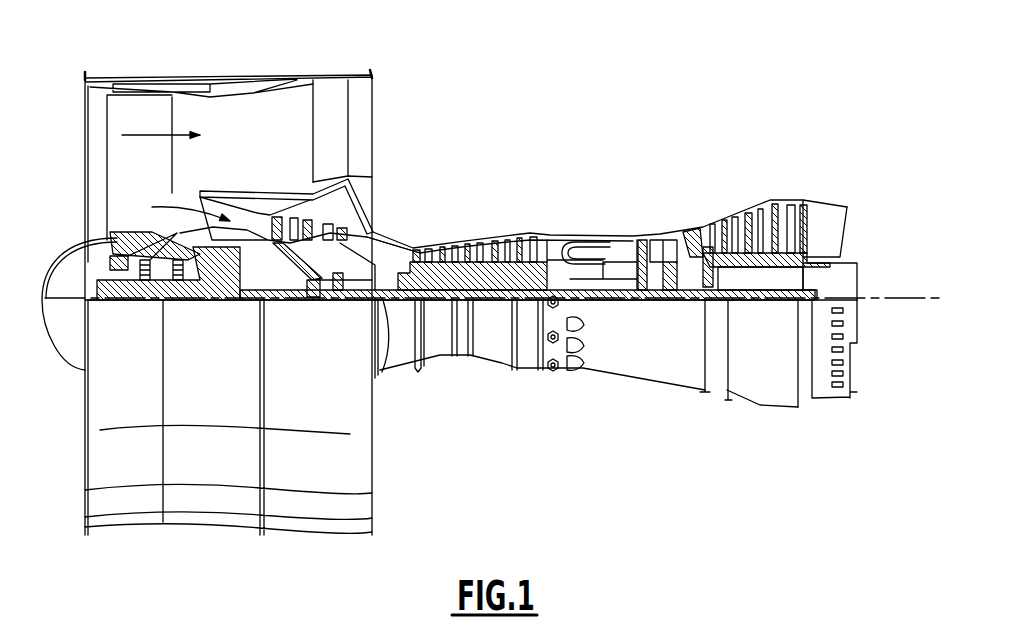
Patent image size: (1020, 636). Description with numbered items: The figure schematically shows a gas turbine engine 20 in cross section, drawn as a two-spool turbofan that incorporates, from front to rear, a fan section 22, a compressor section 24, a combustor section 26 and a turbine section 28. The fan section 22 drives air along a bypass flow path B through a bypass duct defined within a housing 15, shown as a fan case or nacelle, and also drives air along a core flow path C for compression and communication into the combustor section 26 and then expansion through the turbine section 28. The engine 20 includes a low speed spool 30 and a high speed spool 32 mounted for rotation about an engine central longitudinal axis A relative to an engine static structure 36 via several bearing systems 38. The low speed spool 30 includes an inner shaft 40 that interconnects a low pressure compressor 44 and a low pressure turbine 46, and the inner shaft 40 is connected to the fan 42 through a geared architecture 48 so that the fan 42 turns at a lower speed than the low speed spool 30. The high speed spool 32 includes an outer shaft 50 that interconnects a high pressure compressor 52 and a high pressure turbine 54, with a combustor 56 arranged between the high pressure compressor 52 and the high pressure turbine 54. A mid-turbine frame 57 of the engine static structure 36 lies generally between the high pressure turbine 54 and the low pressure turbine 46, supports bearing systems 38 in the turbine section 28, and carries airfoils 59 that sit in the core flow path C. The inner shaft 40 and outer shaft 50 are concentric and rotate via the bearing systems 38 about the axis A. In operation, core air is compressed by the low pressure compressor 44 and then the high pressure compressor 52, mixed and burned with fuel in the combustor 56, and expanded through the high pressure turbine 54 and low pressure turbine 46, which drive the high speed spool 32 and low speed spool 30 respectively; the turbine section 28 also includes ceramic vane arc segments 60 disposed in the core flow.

The housing 15 is at (227, 80).
The gas turbine engine 20 is at (583, 123).
The fan section 22 is at (174, 73).
The compressor section 24 is at (406, 229).
The combustor section 26 is at (586, 224).
The turbine section 28 is at (740, 165).
The low speed spool 30 is at (495, 304).
The high speed spool 32 is at (527, 260).
The engine static structure 36 is at (527, 368).
The bearing systems 38 is at (338, 293).
The inner shaft 40 is at (392, 370).
The fan 42 is at (152, 180).
The low pressure compressor 44 is at (317, 223).
The low pressure turbine 46 is at (758, 200).
The geared architecture 48 is at (232, 287).
The outer shaft 50 is at (583, 287).
The high pressure compressor 52 is at (478, 245).
The high pressure turbine 54 is at (643, 242).
The combustor 56 is at (592, 250).
The mid-turbine frame 57 is at (691, 233).
The airfoils 59 is at (718, 273).
The ceramic vane arc segments 60 is at (695, 231).
The engine central longitudinal axis A is at (907, 300).
The bypass flow path B is at (150, 133).
The core flow path C is at (181, 206).